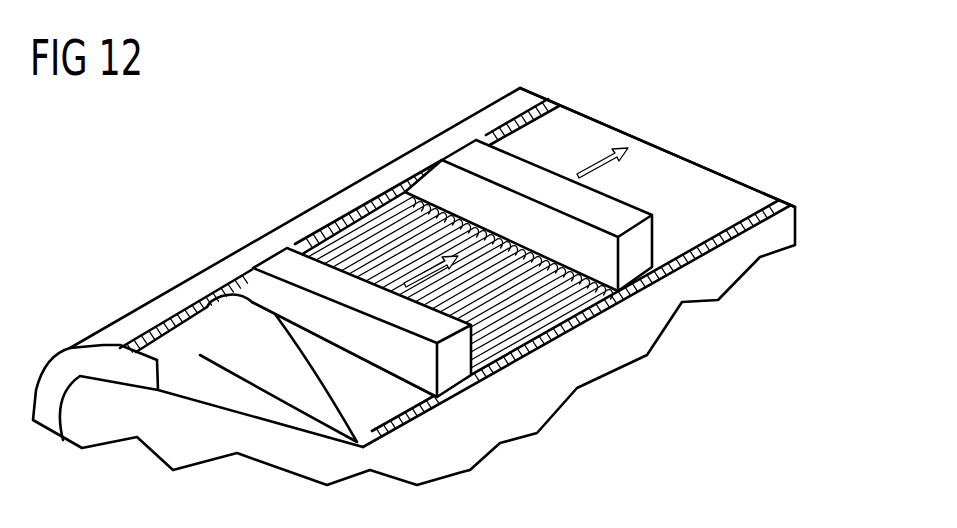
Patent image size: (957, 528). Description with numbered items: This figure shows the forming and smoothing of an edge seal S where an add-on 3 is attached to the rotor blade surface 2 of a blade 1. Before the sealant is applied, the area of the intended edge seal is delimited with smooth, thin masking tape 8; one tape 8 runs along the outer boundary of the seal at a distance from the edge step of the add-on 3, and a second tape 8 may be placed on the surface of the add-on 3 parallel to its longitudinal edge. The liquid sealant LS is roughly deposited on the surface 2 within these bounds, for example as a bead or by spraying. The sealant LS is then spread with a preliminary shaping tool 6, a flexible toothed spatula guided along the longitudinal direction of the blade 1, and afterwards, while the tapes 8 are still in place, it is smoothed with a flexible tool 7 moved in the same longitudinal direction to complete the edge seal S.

The blade 1 is at (152, 452).
The rotor blade surface 2 is at (652, 340).
The add-on 3 is at (189, 289).
The preliminary shaping tool 6 is at (472, 160).
The flexible tool 7 is at (290, 262).
The masking tape 8 is at (537, 100).
The edge seal S is at (232, 342).
The liquid sealant LS is at (685, 172).